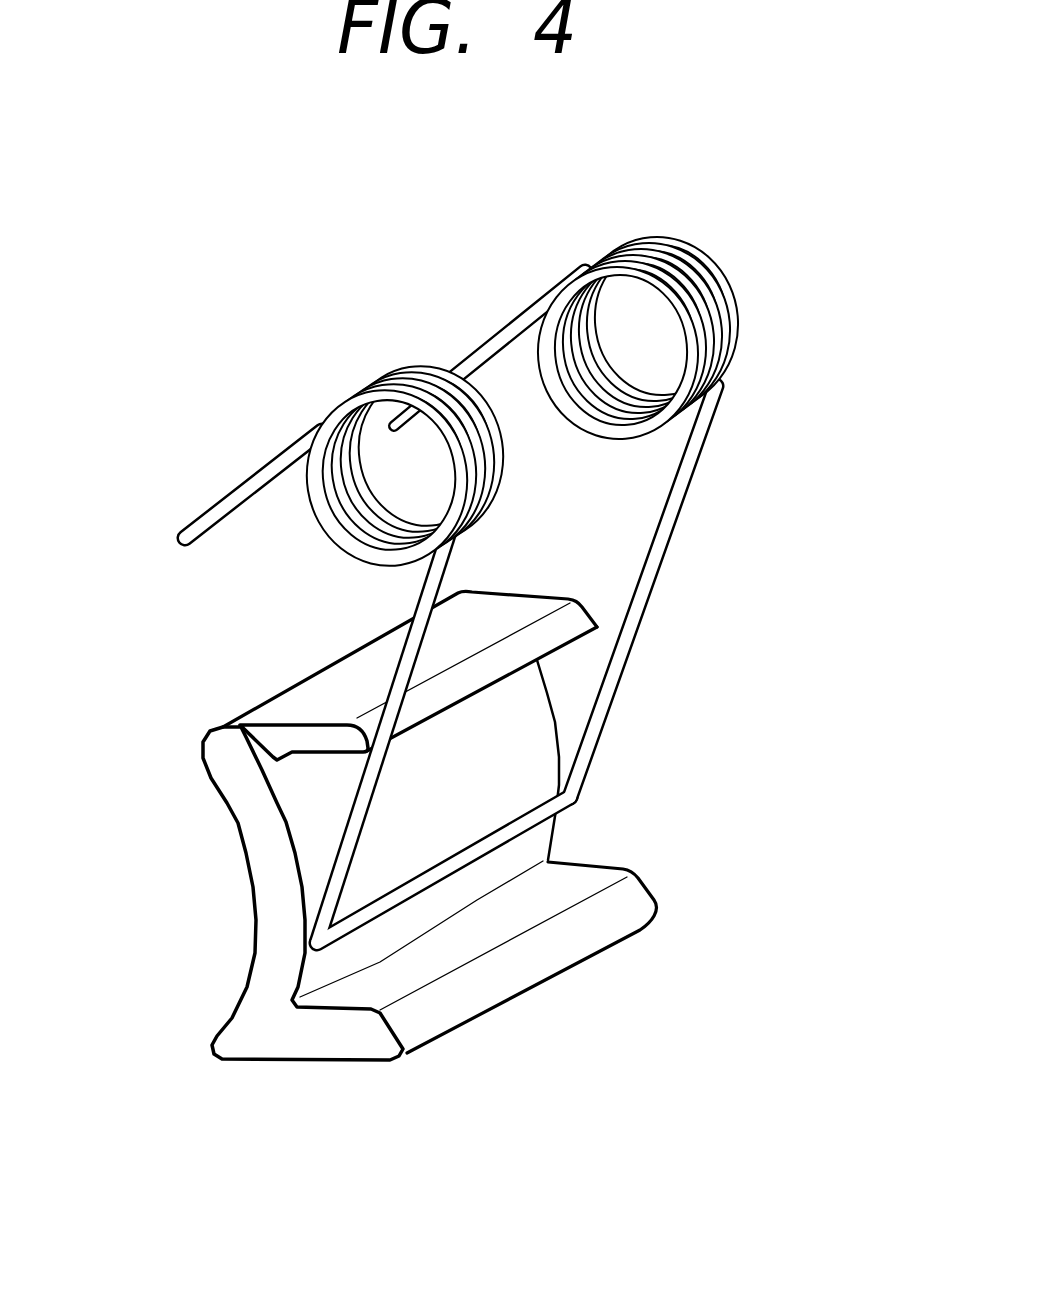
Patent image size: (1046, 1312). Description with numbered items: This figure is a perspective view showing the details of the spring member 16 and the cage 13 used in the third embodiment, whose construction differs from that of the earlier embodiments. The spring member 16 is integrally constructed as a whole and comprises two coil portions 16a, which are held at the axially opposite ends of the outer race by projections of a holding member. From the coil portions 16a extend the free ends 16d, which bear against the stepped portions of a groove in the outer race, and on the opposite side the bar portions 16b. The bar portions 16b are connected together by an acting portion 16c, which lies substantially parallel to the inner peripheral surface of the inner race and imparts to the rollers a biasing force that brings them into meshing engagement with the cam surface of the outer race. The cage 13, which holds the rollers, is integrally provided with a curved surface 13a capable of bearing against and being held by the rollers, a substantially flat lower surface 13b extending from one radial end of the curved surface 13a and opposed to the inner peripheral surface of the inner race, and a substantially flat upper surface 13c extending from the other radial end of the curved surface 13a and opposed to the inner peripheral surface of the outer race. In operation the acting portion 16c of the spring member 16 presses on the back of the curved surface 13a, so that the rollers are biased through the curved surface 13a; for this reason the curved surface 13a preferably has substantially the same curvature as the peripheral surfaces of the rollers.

The cage 13 is at (349, 888).
The curved surface 13a is at (254, 920).
The lower surface 13b is at (338, 1047).
The upper surface 13c is at (300, 703).
The spring member 16 is at (555, 556).
The coil portions 16a is at (693, 277).
The bar portions 16b is at (668, 540).
The acting portion 16c is at (557, 852).
The free ends 16d is at (286, 462).